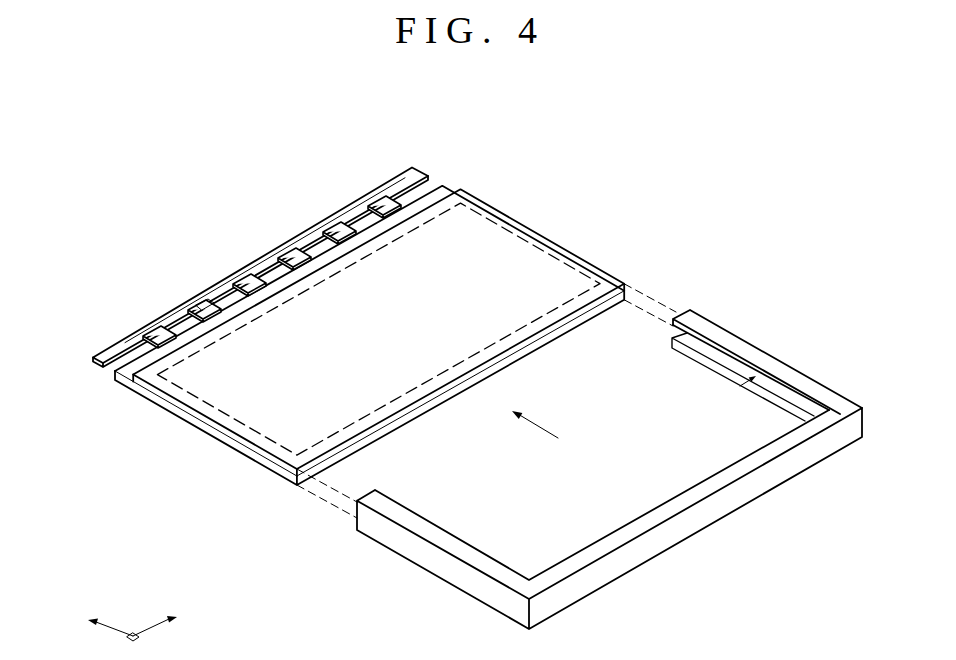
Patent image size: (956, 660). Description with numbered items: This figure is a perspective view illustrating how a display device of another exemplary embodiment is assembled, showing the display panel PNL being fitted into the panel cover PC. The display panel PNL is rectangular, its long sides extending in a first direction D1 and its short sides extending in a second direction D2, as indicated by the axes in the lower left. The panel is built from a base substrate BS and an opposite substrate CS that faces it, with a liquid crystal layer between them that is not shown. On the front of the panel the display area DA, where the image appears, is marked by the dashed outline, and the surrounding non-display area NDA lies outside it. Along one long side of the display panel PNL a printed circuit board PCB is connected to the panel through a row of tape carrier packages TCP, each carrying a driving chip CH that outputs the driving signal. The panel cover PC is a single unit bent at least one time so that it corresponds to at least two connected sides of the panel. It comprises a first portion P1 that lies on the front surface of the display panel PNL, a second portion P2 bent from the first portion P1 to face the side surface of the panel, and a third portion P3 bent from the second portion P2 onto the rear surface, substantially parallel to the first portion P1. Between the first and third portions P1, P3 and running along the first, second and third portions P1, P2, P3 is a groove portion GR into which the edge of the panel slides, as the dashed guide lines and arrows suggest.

The display panel PNL is at (332, 331).
The base substrate BS is at (118, 377).
The opposite substrate CS is at (358, 326).
The display area DA is at (397, 326).
The non-display area NDA is at (332, 270).
The printed circuit board PCB is at (255, 267).
The tape carrier package TCP is at (155, 334).
The driving chip CH is at (205, 311).
The panel cover PC is at (579, 445).
The first portion P1 is at (667, 313).
The second portion P2 is at (693, 312).
The third portion P3 is at (678, 337).
The groove portion GR is at (743, 378).
The first direction D1 is at (166, 624).
The second direction D2 is at (97, 622).